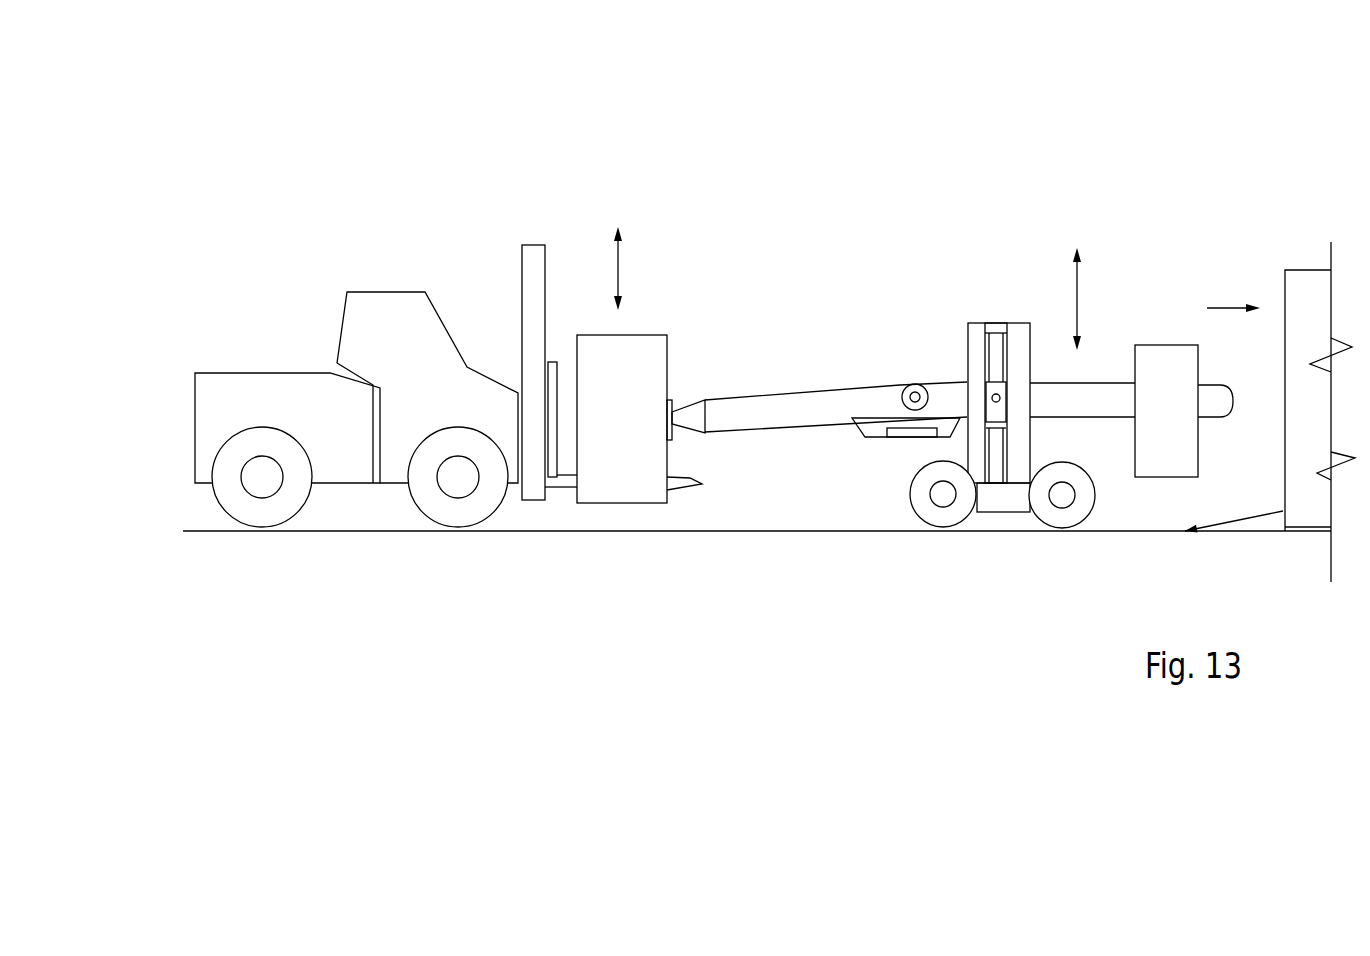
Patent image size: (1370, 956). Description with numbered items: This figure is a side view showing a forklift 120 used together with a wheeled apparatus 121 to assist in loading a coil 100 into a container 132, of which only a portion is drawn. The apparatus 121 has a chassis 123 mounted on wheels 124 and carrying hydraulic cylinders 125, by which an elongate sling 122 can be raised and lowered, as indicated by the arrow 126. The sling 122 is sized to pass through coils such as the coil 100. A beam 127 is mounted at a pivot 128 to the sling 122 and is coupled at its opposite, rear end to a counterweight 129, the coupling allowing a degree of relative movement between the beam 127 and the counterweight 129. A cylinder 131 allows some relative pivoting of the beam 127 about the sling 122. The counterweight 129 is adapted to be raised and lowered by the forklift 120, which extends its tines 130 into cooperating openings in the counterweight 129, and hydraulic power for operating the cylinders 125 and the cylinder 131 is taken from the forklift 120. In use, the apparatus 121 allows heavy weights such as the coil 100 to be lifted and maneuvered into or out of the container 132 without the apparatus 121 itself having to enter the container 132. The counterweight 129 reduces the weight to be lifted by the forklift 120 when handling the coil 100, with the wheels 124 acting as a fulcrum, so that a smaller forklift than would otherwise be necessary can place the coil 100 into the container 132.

The coil 100 is at (1160, 360).
The forklift 120 is at (377, 310).
The wheeled apparatus 121 is at (968, 320).
The elongate sling 122 is at (1100, 400).
The chassis 123 is at (1003, 500).
The wheels 124 is at (942, 520).
The hydraulic cylinders 125 is at (993, 457).
The arrow 126 is at (1077, 302).
The beam 127 is at (792, 420).
The pivot 128 is at (913, 385).
The counterweight 129 is at (638, 358).
The tines 130 is at (683, 490).
The cylinder 131 is at (910, 433).
The container 132 is at (1305, 283).